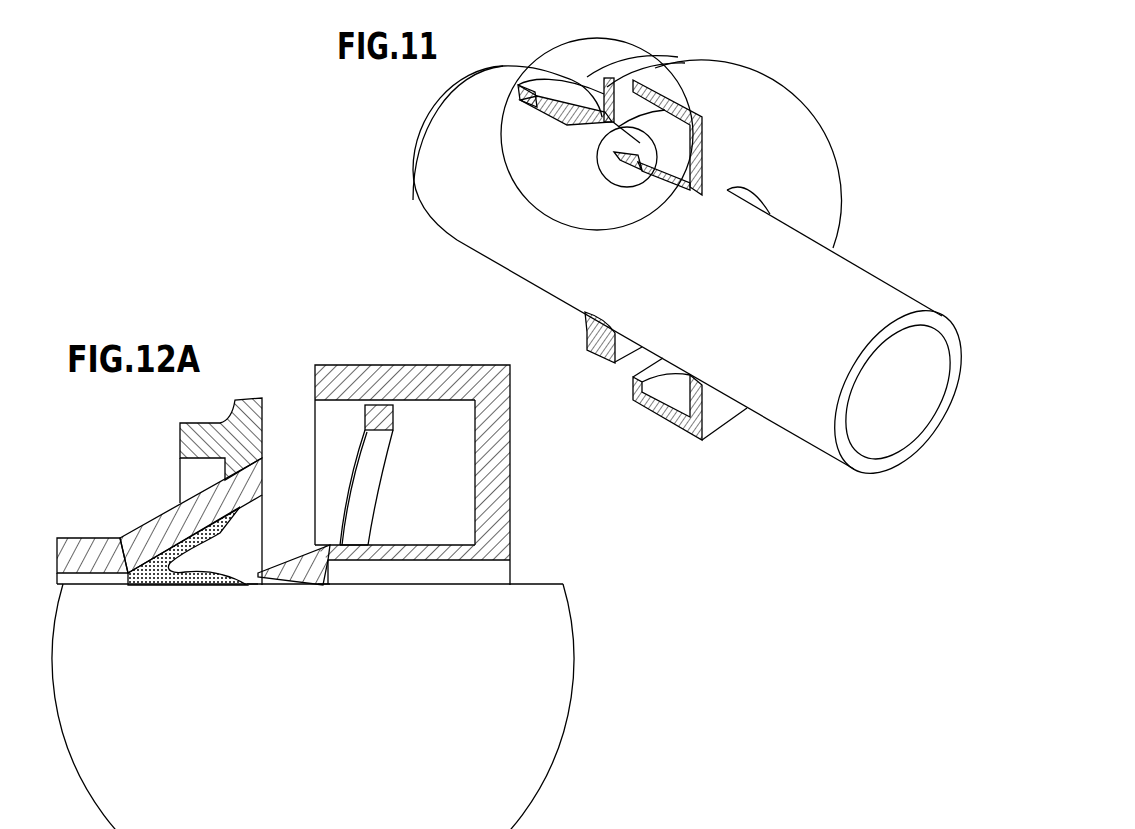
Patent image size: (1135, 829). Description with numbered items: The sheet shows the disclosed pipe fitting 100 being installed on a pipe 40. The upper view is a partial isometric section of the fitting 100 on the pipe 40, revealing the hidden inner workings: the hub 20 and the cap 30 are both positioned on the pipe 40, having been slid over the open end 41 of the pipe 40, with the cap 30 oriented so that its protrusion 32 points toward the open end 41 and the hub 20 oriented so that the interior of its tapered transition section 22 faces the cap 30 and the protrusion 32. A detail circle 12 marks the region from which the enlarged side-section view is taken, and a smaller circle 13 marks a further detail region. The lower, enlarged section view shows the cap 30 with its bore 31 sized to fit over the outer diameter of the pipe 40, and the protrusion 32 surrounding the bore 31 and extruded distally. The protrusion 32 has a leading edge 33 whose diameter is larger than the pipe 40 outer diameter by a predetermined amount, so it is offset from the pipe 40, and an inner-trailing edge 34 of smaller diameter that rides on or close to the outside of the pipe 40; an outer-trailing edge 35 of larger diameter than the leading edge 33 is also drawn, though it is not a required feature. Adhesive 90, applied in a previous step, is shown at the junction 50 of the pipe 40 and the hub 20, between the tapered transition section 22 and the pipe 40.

In FIG. 11, the fitting 100 is at (847, 73).
In FIG. 11, the circle 12 is at (597, 118).
In FIG. 11, the section indicator for FIG. 13 is at (697, 109).
In FIG. 11, the hub 20 is at (602, 357).
In FIG. 12A, the hub 20 is at (150, 530).
In FIG. 11, the tapered transition section 22 is at (582, 125).
In FIG. 12A, the tapered transition section 22 is at (180, 517).
In FIG. 11, the cap 30 is at (843, 180).
In FIG. 12A, the cap 30 is at (510, 515).
In FIG. 12A, the bore 31 is at (420, 560).
In FIG. 11, the protrusion 32 is at (636, 167).
In FIG. 12A, the protrusion 32 is at (300, 567).
In FIG. 12A, the leading edge 33 is at (253, 585).
In FIG. 12A, the inner-trailing edge 34 is at (322, 585).
In FIG. 12A, the outer-trailing edge 35 is at (340, 543).
In FIG. 11, the pipe 40 is at (457, 238).
In FIG. 12A, the pipe 40 is at (537, 585).
In FIG. 11, the open end 41 is at (413, 167).
In FIG. 12A, the junction 50 is at (133, 600).
In FIG. 12A, the adhesive 90 is at (160, 585).